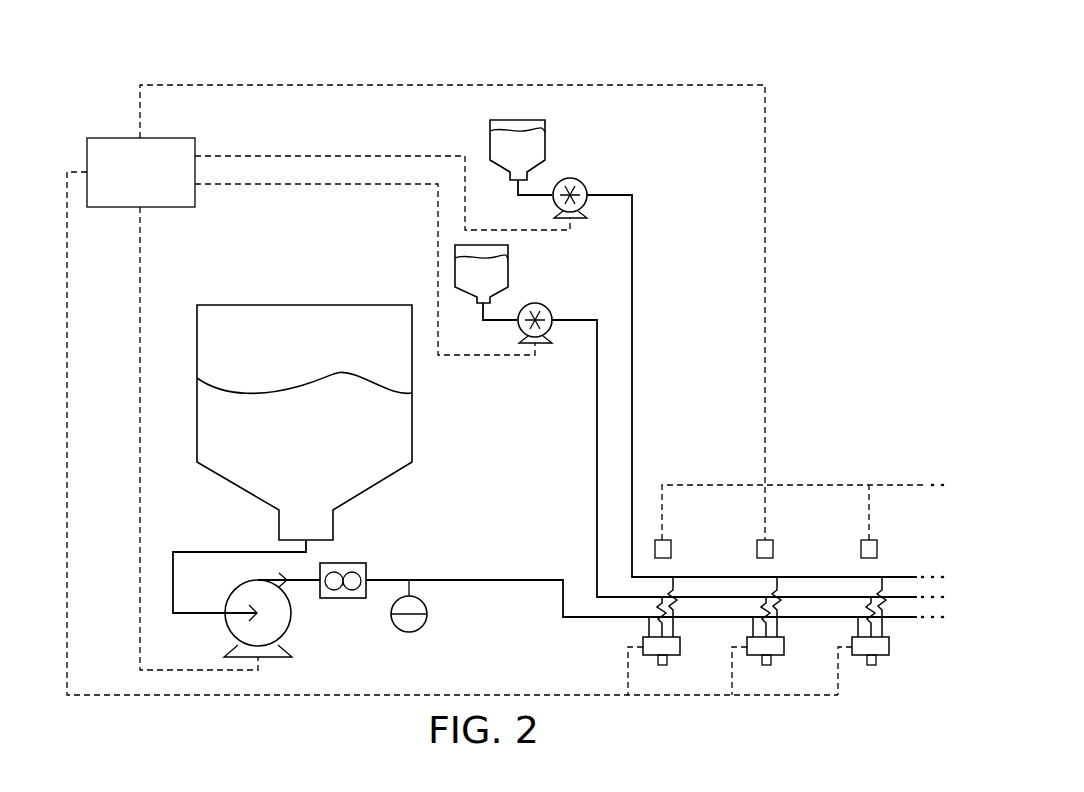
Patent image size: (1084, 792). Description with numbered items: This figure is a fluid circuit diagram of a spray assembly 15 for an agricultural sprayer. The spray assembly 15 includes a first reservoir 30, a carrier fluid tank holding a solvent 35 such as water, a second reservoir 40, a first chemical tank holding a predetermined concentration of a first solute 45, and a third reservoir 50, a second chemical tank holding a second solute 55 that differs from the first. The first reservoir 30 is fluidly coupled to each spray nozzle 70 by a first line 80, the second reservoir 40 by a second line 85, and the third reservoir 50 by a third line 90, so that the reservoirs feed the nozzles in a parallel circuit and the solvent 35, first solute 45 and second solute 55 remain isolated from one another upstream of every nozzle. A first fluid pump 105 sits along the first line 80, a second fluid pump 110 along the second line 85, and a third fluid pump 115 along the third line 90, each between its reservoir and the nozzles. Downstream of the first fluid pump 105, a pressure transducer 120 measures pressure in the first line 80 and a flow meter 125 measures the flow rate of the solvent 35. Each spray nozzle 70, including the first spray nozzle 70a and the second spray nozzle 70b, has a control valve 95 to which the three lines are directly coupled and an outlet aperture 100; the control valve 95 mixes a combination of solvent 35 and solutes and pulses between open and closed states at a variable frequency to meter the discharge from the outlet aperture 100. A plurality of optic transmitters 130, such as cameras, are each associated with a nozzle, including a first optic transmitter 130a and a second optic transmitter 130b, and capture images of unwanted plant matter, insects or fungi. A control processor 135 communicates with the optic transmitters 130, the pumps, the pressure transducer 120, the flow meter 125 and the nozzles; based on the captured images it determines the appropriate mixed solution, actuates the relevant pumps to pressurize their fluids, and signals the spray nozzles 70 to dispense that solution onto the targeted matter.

The spray assembly 15 is at (834, 254).
The first reservoir 30 is at (260, 305).
The solvent 35 is at (304, 413).
The second reservoir 40 is at (508, 256).
The first solute 45 is at (481, 272).
The third reservoir 50 is at (545, 130).
The second solute 55 is at (517, 146).
The spray nozzle 70 is at (888, 721).
The first spray nozzle 70a is at (668, 721).
The second spray nozzle 70b is at (773, 721).
The first line 80 is at (488, 580).
The second line 85 is at (597, 456).
The third line 90 is at (632, 248).
The control valve 95 is at (643, 641).
The outlet aperture 100 is at (663, 665).
The first fluid pump 105 is at (288, 632).
The second fluid pump 110 is at (549, 308).
The third fluid pump 115 is at (586, 182).
The pressure transducer 120 is at (409, 632).
The flow meter 125 is at (354, 563).
The optic transmitter 130 is at (944, 497).
The first optic transmitter 130a is at (671, 549).
The second optic transmitter 130b is at (773, 549).
The control processor 135 is at (115, 138).